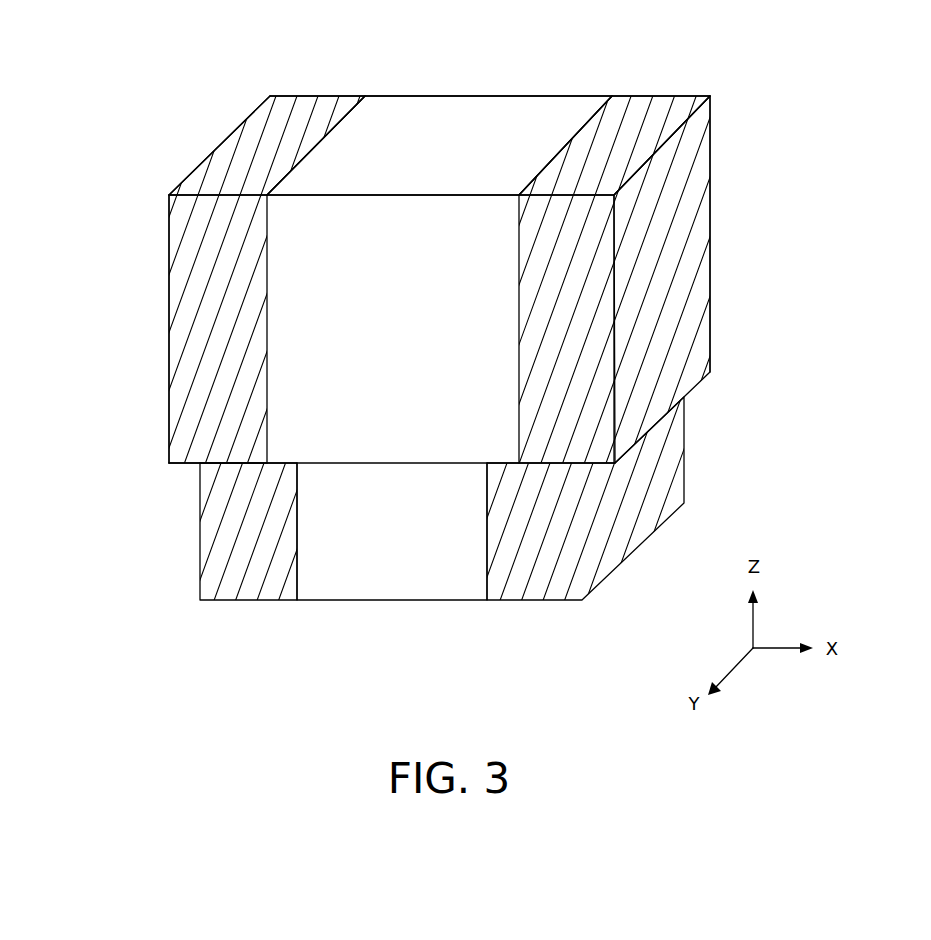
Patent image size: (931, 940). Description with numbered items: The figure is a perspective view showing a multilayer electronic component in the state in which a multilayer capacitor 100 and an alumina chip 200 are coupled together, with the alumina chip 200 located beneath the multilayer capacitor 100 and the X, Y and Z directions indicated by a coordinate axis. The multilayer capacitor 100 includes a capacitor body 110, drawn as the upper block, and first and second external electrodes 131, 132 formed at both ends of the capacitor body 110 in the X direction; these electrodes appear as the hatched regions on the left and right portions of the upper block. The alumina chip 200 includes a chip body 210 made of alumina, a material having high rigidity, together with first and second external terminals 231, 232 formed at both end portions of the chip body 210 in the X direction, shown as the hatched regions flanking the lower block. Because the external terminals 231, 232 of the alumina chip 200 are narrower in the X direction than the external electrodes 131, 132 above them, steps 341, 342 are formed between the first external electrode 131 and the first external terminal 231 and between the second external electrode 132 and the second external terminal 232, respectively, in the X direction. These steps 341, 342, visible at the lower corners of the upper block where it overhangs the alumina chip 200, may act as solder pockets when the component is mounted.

The multilayer capacitor 100 is at (143, 349).
The capacitor body 110 is at (433, 113).
The first external electrode 131 is at (302, 96).
The second external electrode 132 is at (654, 99).
The step 341 is at (170, 465).
The step 342 is at (698, 381).
The alumina chip 200 is at (163, 558).
The chip body 210 is at (357, 580).
The first external terminal 231 is at (238, 596).
The second external terminal 232 is at (533, 596).